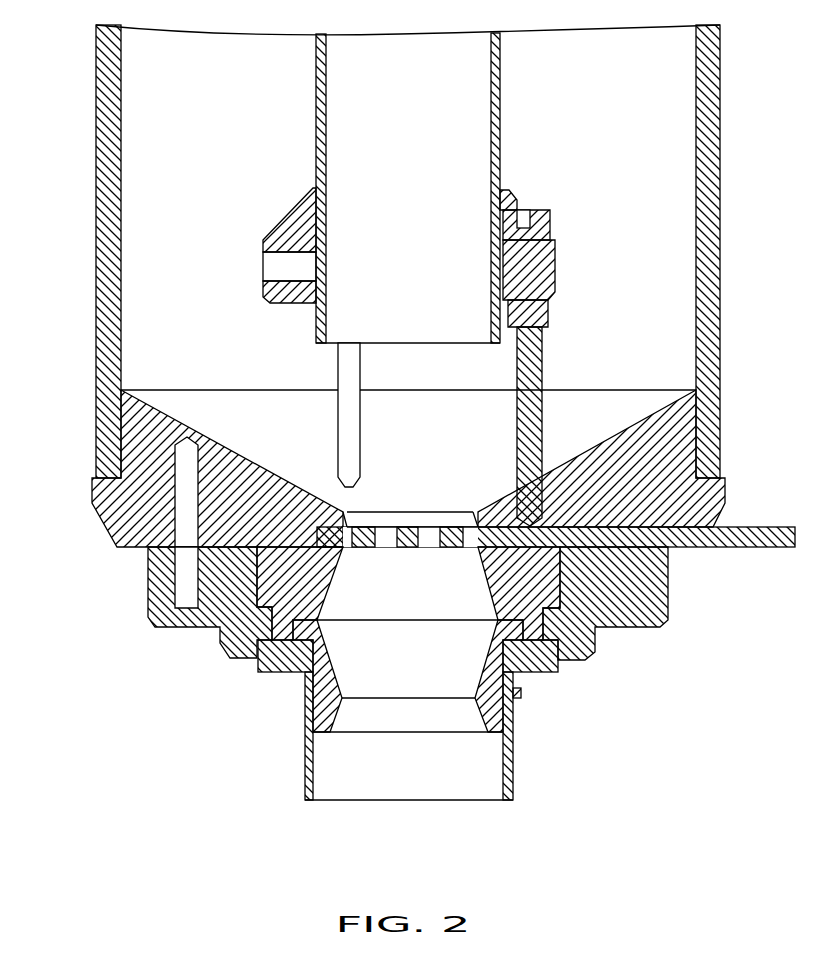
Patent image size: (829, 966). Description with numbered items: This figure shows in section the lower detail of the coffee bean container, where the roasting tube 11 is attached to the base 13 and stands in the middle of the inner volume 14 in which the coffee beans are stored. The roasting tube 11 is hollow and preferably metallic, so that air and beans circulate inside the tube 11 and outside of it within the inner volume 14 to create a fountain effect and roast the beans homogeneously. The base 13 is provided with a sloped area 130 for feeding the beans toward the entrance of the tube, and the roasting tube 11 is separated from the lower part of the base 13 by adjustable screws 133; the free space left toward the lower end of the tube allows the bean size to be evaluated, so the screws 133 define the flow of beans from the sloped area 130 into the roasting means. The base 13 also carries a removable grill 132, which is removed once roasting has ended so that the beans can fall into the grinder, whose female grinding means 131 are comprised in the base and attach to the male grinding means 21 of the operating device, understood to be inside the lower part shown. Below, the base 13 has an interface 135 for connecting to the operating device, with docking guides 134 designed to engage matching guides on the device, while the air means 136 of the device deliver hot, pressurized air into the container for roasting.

The roasting tube 11 is at (458, 125).
The base 13 is at (108, 527).
The inner volume 14 is at (148, 248).
The male grinding means 21 is at (412, 682).
The sloped area 130 is at (160, 405).
The female grinding means 131 is at (405, 565).
The removable grill 132 is at (765, 527).
The adjustable screws 133 is at (537, 278).
The docking guides 134 is at (521, 690).
The interface 135 is at (305, 715).
The air means 136 is at (305, 788).